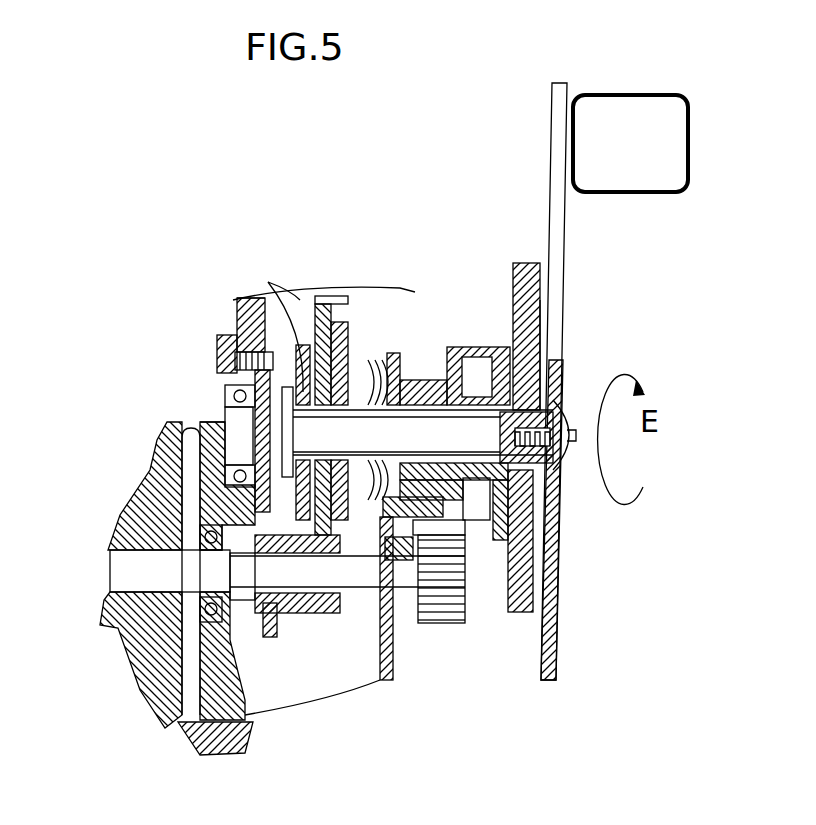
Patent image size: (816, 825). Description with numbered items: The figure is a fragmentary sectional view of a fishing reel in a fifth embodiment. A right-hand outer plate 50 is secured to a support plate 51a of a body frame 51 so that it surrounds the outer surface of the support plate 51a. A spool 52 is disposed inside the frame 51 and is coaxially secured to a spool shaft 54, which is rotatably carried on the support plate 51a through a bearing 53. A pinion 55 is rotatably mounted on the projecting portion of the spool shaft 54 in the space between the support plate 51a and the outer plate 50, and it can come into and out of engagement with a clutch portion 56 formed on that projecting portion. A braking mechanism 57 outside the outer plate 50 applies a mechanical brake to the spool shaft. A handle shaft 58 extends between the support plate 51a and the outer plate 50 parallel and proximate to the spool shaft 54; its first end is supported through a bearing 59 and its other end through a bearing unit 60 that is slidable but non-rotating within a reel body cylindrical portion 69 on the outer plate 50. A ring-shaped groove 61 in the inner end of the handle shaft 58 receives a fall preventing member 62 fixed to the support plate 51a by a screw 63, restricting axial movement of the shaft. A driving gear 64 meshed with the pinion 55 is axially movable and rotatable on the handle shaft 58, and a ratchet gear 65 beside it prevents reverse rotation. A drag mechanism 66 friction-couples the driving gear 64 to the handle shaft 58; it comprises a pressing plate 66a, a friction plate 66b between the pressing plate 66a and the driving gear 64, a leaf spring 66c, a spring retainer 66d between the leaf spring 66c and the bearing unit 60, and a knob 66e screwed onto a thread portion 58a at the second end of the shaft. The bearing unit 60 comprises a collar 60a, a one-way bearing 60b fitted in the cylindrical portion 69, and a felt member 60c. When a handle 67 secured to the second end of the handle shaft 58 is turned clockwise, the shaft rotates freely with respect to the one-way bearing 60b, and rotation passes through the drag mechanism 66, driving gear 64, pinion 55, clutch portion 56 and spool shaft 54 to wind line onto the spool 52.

The right-hand outer plate 50 is at (390, 296).
The body frame 51 is at (237, 305).
The support plate 51a is at (237, 317).
The spool 52 is at (162, 465).
The bearing 53 is at (160, 640).
The spool shaft 54 is at (118, 562).
The pinion 55 is at (290, 565).
The clutch portion 56 is at (207, 690).
The braking mechanism 57 is at (433, 623).
The handle shaft 58 is at (170, 428).
The thread portion 58a is at (495, 505).
The bearing 59 is at (226, 393).
The bearing unit 60 is at (433, 352).
The collar 60a is at (455, 505).
The one-way bearing 60b is at (480, 380).
The felt member 60c is at (552, 332).
The ring-shaped groove 61 is at (192, 478).
The fall preventing member 62 is at (220, 340).
The screw 63 is at (270, 298).
The driving gear 64 is at (320, 300).
The ratchet gear 65 is at (300, 344).
The drag mechanism 66 is at (357, 315).
The pressing plate 66a is at (375, 300).
The friction plate 66b is at (331, 300).
The leaf spring 66c is at (343, 545).
The spring retainer 66d is at (380, 500).
The knob 66e is at (532, 292).
The handle 67 is at (556, 232).
The reel body cylindrical portion 69 is at (465, 595).